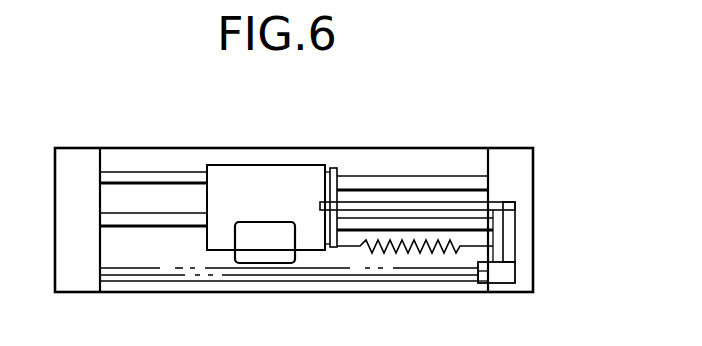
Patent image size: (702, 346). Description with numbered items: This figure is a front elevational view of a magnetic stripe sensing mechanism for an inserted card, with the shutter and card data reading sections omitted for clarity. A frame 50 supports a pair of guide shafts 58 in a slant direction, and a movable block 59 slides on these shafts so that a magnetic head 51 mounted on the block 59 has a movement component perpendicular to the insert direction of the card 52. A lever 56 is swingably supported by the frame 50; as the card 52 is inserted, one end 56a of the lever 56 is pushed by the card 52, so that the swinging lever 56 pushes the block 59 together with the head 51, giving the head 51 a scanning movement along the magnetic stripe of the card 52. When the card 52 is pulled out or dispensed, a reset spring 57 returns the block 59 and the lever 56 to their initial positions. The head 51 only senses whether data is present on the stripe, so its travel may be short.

The frame 50 is at (513, 193).
The magnetic head 51 is at (273, 258).
The card 52 is at (140, 277).
The lever 56 is at (447, 200).
The one end of the lever 56a is at (483, 283).
The reset spring 57 is at (408, 250).
The guide shafts 58 is at (178, 216).
The movable block 59 is at (245, 181).